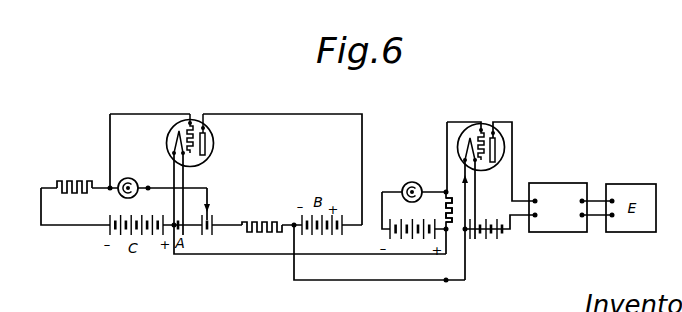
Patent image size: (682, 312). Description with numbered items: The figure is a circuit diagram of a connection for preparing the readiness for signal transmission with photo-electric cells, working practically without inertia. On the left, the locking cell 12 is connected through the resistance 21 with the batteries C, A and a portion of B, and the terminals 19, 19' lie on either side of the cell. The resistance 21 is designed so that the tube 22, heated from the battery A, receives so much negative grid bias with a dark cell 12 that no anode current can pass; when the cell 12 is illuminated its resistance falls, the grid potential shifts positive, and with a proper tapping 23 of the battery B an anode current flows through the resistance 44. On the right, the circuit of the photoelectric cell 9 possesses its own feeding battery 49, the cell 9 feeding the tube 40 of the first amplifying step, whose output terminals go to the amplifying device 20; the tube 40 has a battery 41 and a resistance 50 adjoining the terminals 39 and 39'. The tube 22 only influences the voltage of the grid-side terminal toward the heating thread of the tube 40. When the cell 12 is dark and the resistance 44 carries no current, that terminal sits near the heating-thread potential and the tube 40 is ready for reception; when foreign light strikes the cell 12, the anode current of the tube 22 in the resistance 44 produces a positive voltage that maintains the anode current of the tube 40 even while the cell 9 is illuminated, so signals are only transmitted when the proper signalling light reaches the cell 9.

The photoelectric cell 9 is at (405, 186).
The locking cell 12 is at (131, 179).
The terminal 19 is at (119, 175).
The terminal 19' is at (154, 175).
The amplifying device 20 is at (558, 207).
The resistance 21 is at (74, 176).
The tube 22 is at (212, 143).
The tapping 23 is at (208, 200).
The terminal 39 is at (437, 182).
The terminal 39' is at (457, 291).
The tube of the first amplifying step 40 is at (483, 172).
The battery 41 is at (490, 243).
The resistance 44 is at (264, 221).
The feeding battery 49 is at (390, 236).
The resistor 50 is at (446, 208).